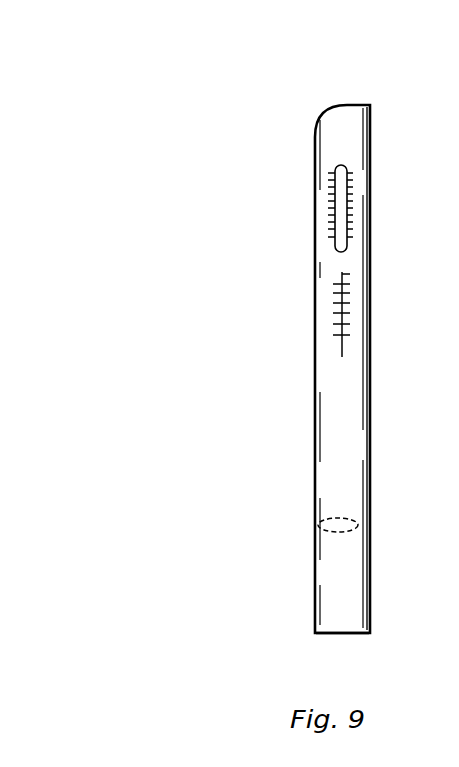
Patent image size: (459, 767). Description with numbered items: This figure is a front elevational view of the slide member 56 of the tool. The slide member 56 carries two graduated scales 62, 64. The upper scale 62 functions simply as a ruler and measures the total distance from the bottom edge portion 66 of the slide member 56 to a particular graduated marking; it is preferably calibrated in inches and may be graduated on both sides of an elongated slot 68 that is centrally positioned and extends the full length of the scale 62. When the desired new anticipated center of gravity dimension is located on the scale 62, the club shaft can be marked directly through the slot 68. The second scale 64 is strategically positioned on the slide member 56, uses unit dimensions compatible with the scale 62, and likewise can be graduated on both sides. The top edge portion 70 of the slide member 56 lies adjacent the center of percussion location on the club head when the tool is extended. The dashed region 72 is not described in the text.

The slide member 56 is at (333, 497).
The upper scale 62 is at (327, 184).
The scale 64 is at (325, 313).
The bottom edge portion 66 is at (340, 636).
The elongated slot 68 is at (340, 166).
The top edge portion 70 is at (365, 104).
The dashed reference region 72 is at (332, 534).